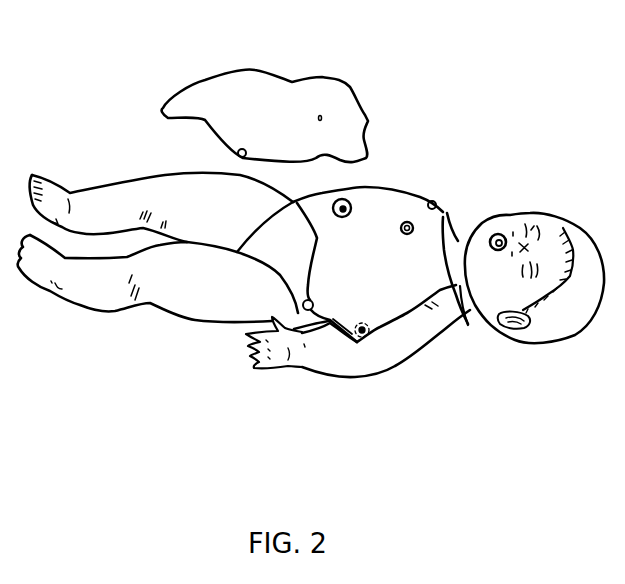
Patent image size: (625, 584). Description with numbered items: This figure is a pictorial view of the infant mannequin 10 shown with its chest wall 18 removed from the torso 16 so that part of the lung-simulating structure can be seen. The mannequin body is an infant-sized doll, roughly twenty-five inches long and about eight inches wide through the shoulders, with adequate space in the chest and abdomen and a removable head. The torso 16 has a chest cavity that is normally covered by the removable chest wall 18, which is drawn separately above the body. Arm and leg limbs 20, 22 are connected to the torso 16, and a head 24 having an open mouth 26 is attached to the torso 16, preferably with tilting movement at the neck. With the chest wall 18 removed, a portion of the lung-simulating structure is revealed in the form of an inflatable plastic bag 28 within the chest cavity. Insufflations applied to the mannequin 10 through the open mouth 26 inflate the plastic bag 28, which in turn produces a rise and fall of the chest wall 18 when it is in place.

The mannequin 10 is at (415, 167).
The torso 16 is at (386, 354).
The chest wall 18 is at (284, 90).
The arm limbs 20 is at (312, 358).
The leg limbs 22 is at (152, 187).
The head 24 is at (553, 222).
The open mouth 26 is at (500, 234).
The inflatable plastic bag 28 is at (408, 296).